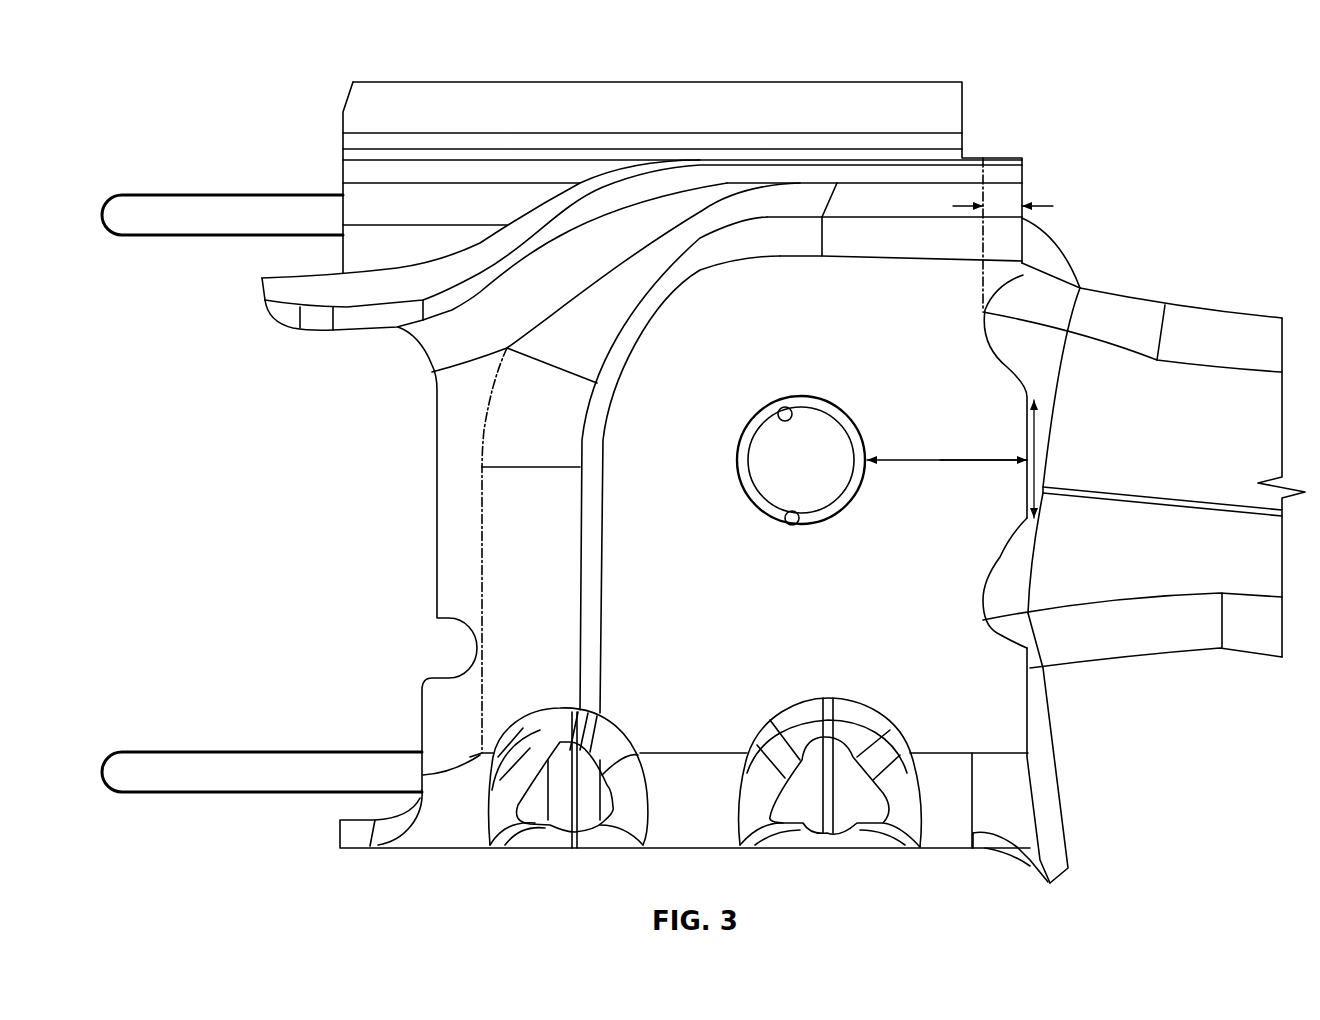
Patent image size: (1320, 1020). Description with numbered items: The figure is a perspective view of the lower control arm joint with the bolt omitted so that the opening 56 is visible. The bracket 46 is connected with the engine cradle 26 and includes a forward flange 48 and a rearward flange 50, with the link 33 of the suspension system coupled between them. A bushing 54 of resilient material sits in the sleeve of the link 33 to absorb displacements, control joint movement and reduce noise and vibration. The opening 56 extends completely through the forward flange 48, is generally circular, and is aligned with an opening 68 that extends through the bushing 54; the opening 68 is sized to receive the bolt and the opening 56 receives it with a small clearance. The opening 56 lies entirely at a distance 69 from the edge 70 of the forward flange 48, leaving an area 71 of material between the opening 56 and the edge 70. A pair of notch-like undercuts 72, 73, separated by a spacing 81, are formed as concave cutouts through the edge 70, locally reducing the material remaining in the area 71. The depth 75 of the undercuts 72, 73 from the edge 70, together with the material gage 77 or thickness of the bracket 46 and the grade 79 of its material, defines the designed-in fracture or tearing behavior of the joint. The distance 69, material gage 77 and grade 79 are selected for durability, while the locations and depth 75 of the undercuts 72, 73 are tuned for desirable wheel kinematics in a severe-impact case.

The engine cradle 26 is at (225, 193).
The link 33 is at (1178, 470).
The bracket 46 is at (928, 852).
The forward flange 48 is at (686, 682).
The rearward flange 50 is at (670, 98).
The bushing 54 is at (765, 512).
The opening 56 is at (797, 523).
The opening 68 is at (781, 408).
The distance 69 is at (975, 458).
The edge 70 is at (1025, 247).
The area 71 is at (940, 507).
The undercut 72 is at (1005, 367).
The undercut 73 is at (995, 575).
The depth 75 is at (1043, 205).
The material gage 77 is at (424, 255).
The grade 79 is at (838, 639).
The spacing 81 is at (1040, 445).